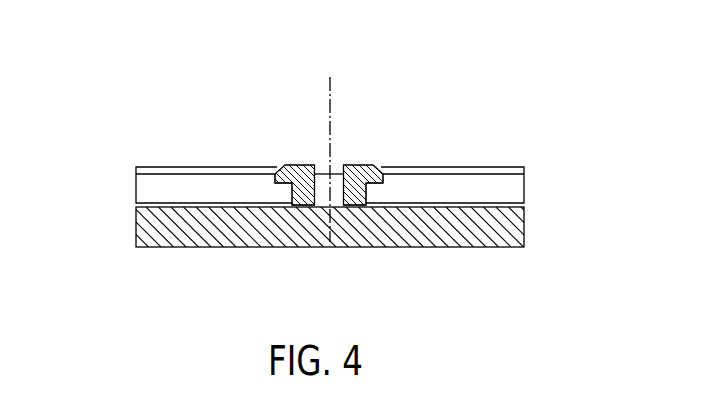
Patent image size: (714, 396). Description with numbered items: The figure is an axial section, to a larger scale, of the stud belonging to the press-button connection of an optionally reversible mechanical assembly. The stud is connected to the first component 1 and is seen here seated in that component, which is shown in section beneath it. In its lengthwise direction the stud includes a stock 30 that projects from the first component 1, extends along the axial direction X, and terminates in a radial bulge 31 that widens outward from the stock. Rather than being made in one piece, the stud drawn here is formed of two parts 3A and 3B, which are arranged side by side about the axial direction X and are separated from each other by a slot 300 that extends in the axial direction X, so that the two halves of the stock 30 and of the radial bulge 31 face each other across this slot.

The first component 1 is at (155, 229).
The first part of the stud 3A is at (283, 156).
The second part of the stud 3B is at (378, 158).
The stock 30 is at (350, 172).
The radial bulge 31 is at (275, 183).
The slot 300 is at (337, 182).
The axial direction X is at (335, 92).